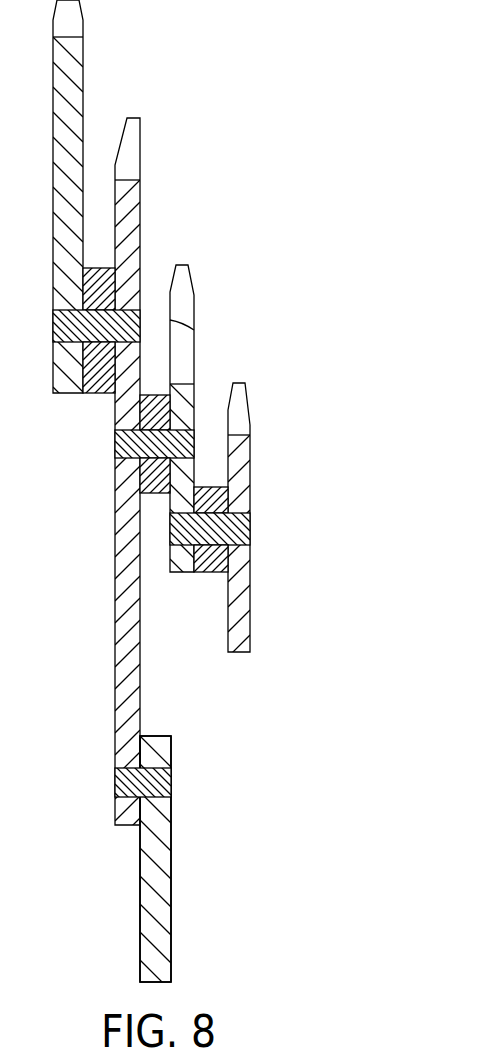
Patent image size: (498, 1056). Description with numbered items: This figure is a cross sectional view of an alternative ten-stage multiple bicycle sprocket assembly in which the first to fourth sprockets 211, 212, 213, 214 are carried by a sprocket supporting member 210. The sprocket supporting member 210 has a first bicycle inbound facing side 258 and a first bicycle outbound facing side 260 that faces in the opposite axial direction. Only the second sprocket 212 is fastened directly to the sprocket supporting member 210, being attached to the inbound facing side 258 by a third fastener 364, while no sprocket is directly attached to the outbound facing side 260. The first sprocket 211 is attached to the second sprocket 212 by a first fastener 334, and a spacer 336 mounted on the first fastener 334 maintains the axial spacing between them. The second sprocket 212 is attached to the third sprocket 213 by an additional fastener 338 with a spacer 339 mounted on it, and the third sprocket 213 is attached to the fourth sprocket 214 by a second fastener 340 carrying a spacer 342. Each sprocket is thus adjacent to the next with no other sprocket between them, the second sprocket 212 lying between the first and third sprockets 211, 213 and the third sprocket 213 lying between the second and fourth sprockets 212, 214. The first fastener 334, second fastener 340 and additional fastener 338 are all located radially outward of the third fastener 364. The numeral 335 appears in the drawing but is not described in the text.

The sprocket supporting member 210 is at (133, 922).
The first sprocket 211 is at (91, 54).
The second sprocket 212 is at (148, 193).
The third sprocket 213 is at (202, 305).
The fourth sprocket 214 is at (258, 430).
The first bicycle inbound facing side 258 is at (140, 866).
The first bicycle outbound facing side 260 is at (172, 891).
The first fastener 334 is at (92, 394).
The second joint lower connector 335 is at (133, 518).
The spacer 336 is at (97, 268).
The additional fastener 338 is at (116, 493).
The spacer 339 is at (150, 394).
The second fastener 340 is at (210, 574).
The spacer 342 is at (200, 487).
The third fastener 364 is at (116, 776).